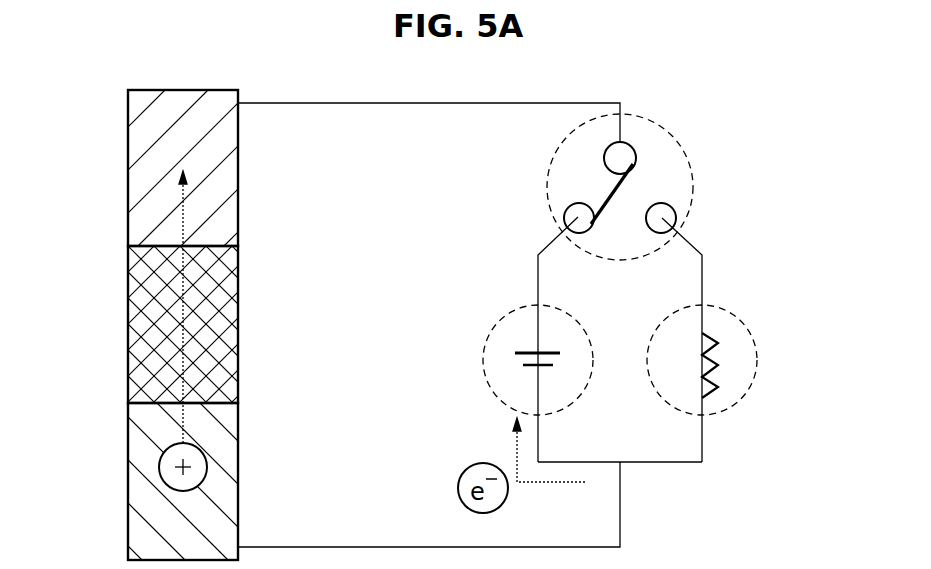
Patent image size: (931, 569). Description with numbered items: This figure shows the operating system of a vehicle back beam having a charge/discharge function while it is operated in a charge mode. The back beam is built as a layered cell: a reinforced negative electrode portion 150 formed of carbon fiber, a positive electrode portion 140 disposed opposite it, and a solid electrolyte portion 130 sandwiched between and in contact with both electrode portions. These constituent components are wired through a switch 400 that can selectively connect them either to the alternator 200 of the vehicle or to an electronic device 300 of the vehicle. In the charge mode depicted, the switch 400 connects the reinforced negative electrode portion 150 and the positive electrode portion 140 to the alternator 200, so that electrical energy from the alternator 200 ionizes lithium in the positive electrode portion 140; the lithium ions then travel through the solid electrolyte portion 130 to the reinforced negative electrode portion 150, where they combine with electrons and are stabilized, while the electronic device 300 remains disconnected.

The reinforced negative electrode portion 150 is at (145, 178).
The solid electrolyte portion 130 is at (145, 332).
The positive electrode portion 140 is at (145, 492).
The alternator 200 is at (483, 358).
The electronic device 300 is at (757, 357).
The switch 400 is at (693, 182).